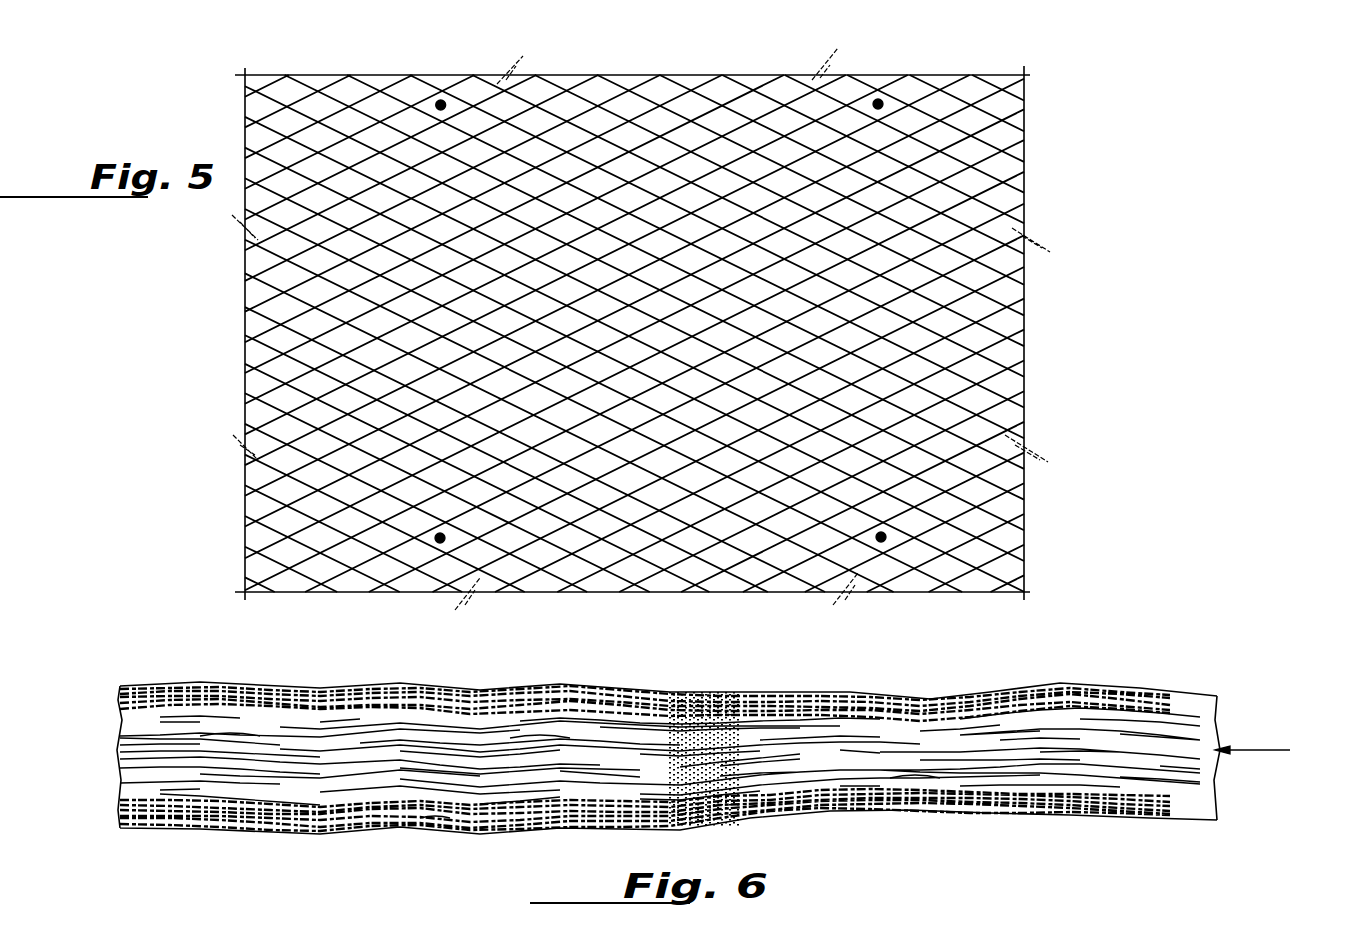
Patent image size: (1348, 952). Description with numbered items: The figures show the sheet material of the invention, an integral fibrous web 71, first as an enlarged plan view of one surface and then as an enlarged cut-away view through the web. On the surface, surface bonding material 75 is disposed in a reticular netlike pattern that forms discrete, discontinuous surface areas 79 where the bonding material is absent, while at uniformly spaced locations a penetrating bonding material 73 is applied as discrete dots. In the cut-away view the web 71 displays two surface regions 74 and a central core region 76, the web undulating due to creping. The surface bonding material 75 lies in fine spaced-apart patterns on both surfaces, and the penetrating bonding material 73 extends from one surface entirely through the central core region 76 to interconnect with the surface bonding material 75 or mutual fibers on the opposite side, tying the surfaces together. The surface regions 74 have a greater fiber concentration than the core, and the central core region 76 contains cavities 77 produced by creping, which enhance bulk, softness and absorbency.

In FIG. 5, the web 71 is at (1048, 403).
In FIG. 6, the web 71 is at (1060, 675).
In FIG. 5, the penetrating bonding material 73 is at (440, 98).
In FIG. 6, the penetrating bonding material 73 is at (705, 712).
In FIG. 6, the surface regions 74 is at (1125, 712).
In FIG. 5, the surface bonding material 75 is at (1003, 165).
In FIG. 6, the surface bonding material 75 is at (200, 690).
In FIG. 6, the central core region 76 is at (1265, 745).
In FIG. 6, the cavities 77 is at (227, 742).
In FIG. 5, the discontinuous surface areas 79 is at (1003, 305).